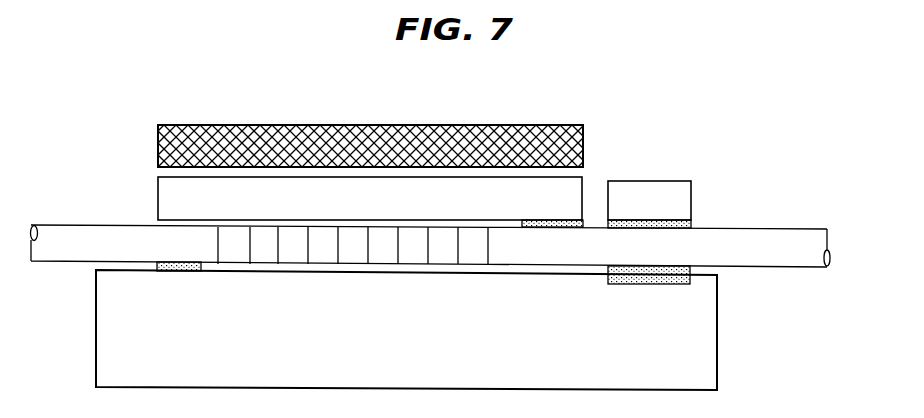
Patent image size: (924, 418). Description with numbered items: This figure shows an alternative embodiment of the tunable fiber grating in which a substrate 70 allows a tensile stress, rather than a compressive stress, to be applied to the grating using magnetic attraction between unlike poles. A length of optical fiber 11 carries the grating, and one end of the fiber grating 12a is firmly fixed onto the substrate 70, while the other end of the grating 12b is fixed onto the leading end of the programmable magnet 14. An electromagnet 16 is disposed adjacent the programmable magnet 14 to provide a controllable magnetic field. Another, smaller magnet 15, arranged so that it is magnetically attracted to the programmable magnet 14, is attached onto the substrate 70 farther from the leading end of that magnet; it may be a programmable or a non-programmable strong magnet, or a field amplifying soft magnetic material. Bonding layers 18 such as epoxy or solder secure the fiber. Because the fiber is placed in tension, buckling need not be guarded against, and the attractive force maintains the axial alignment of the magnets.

The electromagnet 16 is at (237, 125).
The programmable magnet 14 is at (158, 197).
The magnet 15 is at (652, 181).
The end of the fiber grating 12a is at (175, 240).
The end of the fiber grating 12b is at (683, 250).
The optical fiber 11 is at (843, 245).
The bonding layer 18 is at (668, 284).
The substrate 70 is at (540, 335).